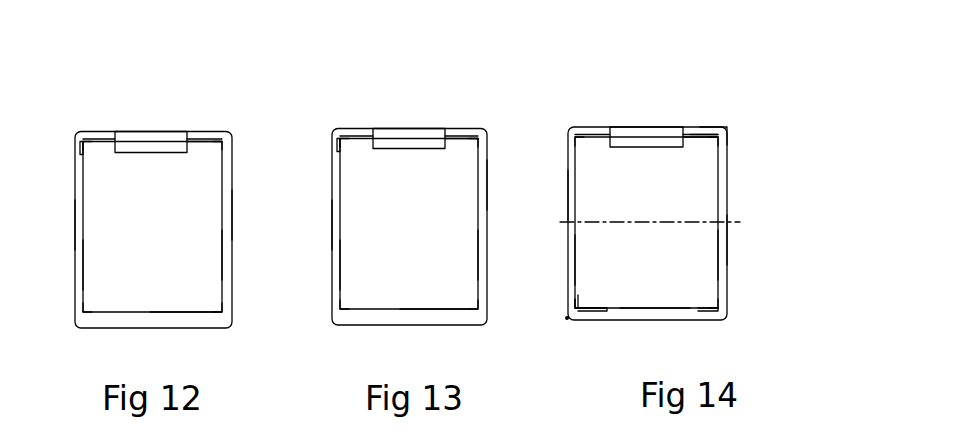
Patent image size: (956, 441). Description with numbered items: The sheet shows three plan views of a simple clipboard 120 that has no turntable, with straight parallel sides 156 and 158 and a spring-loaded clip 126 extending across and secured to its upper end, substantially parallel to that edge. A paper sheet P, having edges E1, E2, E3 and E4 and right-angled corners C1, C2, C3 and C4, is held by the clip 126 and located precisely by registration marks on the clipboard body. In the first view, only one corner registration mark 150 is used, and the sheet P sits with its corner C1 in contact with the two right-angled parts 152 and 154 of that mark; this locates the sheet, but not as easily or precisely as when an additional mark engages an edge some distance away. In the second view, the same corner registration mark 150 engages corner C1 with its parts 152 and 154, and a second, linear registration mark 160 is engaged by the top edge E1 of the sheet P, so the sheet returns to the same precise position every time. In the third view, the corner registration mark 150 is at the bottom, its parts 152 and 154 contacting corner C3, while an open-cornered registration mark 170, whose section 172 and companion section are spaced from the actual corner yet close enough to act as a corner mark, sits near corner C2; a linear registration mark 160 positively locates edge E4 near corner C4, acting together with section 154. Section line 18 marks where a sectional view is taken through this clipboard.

In FIG. 12, the clipboard assembly 120 is at (235, 151).
In FIG. 13, the clipboard assembly 120 is at (490, 151).
In FIG. 14, the clipboard assembly 120 is at (735, 163).
In FIG. 12, the spring-loaded clip 126 is at (150, 130).
In FIG. 13, the spring-loaded clip 126 is at (408, 128).
In FIG. 14, the spring-loaded clip 126 is at (645, 126).
In FIG. 12, the corner registration mark 150 is at (70, 135).
In FIG. 13, the corner registration mark 150 is at (328, 132).
In FIG. 14, the corner registration mark 150 is at (567, 318).
In FIG. 12, the part of corner registration mark 152 is at (98, 139).
In FIG. 13, the part of corner registration mark 152 is at (357, 136).
In FIG. 14, the part of corner registration mark 152 is at (578, 307).
In FIG. 12, the part of corner registration mark 154 is at (79, 153).
In FIG. 13, the part of corner registration mark 154 is at (338, 147).
In FIG. 14, the part of corner registration mark 154 is at (606, 308).
In FIG. 12, the straight side 156 is at (75, 225).
In FIG. 13, the straight side 156 is at (332, 222).
In FIG. 14, the straight side 156 is at (568, 193).
In FIG. 12, the straight side 158 is at (233, 215).
In FIG. 13, the straight side 158 is at (487, 181).
In FIG. 14, the straight side 158 is at (727, 240).
In FIG. 14, the linear registration mark 160 is at (593, 135).
In FIG. 14, the open-cornered registration mark 170 is at (726, 126).
In FIG. 14, the section of open-cornered registration mark 172 is at (700, 134).
In FIG. 14, the section line 18- 18 is at (760, 245).
In FIG. 12, the top edge of paper sheet E1 is at (197, 140).
In FIG. 13, the top edge of paper sheet E1 is at (453, 138).
In FIG. 14, the top edge of paper sheet E1 is at (692, 136).
In FIG. 12, the edge of paper sheet E2 is at (223, 253).
In FIG. 13, the edge of paper sheet E2 is at (478, 250).
In FIG. 14, the edge of paper sheet E2 is at (718, 250).
In FIG. 12, the edge of paper sheet E3 is at (83, 262).
In FIG. 13, the edge of paper sheet E3 is at (341, 260).
In FIG. 14, the edge of paper sheet E3 is at (576, 250).
In FIG. 12, the bottom edge of paper sheet E4 is at (190, 313).
In FIG. 13, the bottom edge of paper sheet E4 is at (448, 310).
In FIG. 14, the bottom edge of paper sheet E4 is at (685, 309).
In FIG. 12, the right-angled corner of paper sheet C1 is at (84, 143).
In FIG. 13, the right-angled corner of paper sheet C1 is at (342, 141).
In FIG. 14, the right-angled corner of paper sheet C1 is at (580, 138).
In FIG. 12, the corner of paper sheet C2 is at (220, 142).
In FIG. 13, the corner of paper sheet C2 is at (476, 140).
In FIG. 14, the corner of paper sheet C2 is at (716, 136).
In FIG. 12, the corner of paper sheet C3 is at (85, 312).
In FIG. 13, the corner of paper sheet C3 is at (342, 309).
In FIG. 14, the corner of paper sheet C3 is at (582, 308).
In FIG. 12, the corner of paper sheet C4 is at (222, 310).
In FIG. 13, the corner of paper sheet C4 is at (477, 308).
In FIG. 14, the corner of paper sheet C4 is at (713, 308).
In FIG. 12, the paper sheet P is at (158, 252).
In FIG. 13, the paper sheet P is at (416, 252).
In FIG. 14, the paper sheet P is at (657, 214).